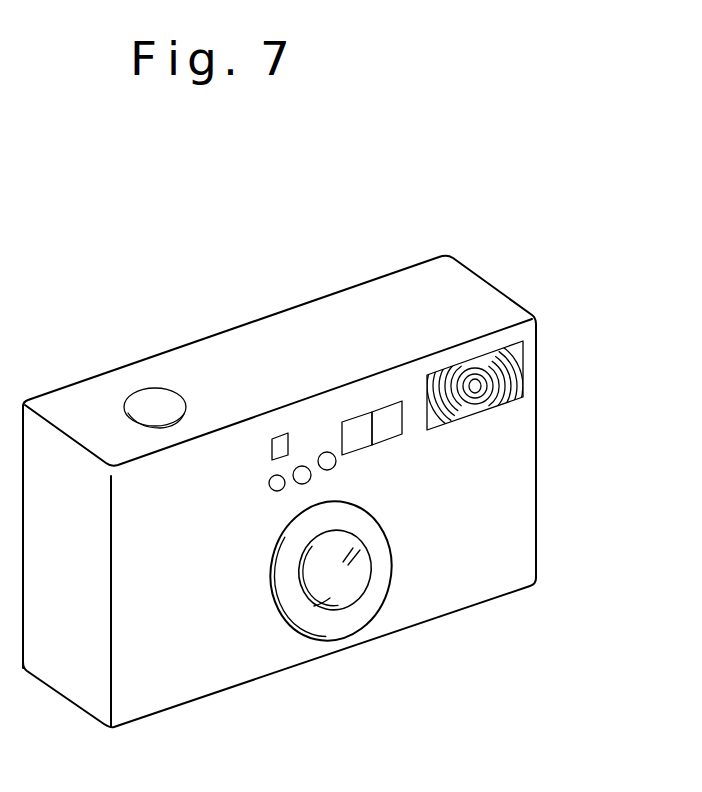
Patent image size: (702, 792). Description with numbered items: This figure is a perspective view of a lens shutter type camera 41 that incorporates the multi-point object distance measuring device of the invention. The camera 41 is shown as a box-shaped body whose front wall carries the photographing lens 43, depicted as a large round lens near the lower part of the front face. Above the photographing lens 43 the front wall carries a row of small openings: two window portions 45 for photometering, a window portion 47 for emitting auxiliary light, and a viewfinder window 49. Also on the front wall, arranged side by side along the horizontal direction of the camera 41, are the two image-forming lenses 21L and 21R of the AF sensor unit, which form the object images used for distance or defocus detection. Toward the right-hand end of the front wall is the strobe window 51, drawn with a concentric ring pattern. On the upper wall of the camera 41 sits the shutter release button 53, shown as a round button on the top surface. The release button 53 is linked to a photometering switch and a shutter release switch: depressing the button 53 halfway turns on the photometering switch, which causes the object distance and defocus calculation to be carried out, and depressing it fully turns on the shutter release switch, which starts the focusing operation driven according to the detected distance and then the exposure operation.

The lens shutter type camera 41 is at (122, 270).
The shutter release button 53 is at (148, 397).
The viewfinder window 49 is at (273, 438).
The image-forming lens 21R is at (348, 440).
The image-forming lens 21L is at (384, 420).
The strobe window 51 is at (517, 371).
The window portion for emitting auxiliary light 47 is at (338, 466).
The window portions for photometering 45 is at (294, 490).
The photographing lens 43 is at (338, 578).